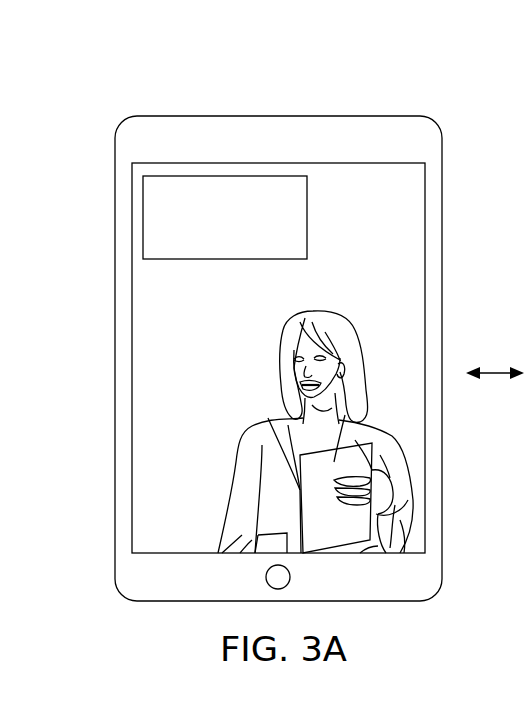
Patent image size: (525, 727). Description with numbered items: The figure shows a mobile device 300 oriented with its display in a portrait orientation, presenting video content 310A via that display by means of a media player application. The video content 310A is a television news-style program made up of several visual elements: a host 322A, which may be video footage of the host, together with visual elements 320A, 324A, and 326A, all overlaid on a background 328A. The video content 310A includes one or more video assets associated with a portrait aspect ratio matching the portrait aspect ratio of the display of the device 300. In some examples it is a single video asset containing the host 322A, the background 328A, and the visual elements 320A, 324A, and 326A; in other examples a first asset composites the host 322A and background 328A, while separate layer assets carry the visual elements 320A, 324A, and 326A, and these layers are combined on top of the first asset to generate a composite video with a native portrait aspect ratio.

The device 300 is at (100, 97).
The video content 310A is at (200, 163).
The visual element 320A is at (143, 225).
The host 322A is at (410, 533).
The visual element 324A is at (138, 540).
The visual element 326A is at (405, 165).
The background 328A is at (312, 300).